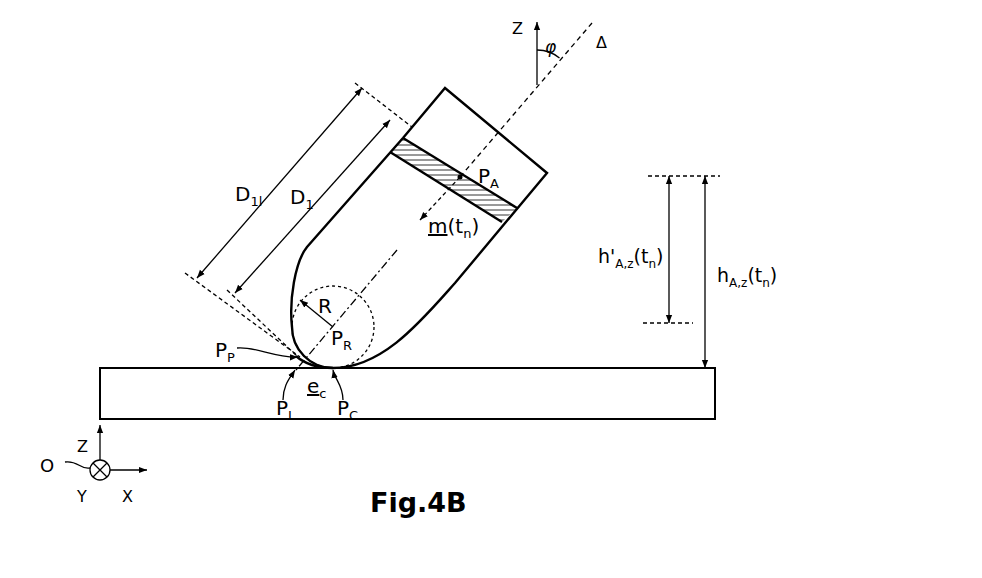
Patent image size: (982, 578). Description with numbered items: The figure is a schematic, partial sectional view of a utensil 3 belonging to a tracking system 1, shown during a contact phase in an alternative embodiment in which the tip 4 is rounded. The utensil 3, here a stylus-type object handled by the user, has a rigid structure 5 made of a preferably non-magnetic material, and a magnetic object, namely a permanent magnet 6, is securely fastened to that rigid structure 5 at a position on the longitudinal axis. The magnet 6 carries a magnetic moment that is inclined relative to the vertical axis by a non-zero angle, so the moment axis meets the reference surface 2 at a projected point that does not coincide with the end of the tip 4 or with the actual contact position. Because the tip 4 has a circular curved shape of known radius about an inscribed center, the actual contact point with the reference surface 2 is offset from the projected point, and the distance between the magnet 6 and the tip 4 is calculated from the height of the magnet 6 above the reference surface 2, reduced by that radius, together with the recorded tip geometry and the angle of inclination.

The tracking system 1 is at (75, 226).
The reference surface 2 is at (607, 366).
The utensil 3 is at (580, 170).
The tip 4 is at (282, 367).
The rigid structure 5 is at (531, 201).
The magnet 6 is at (411, 125).